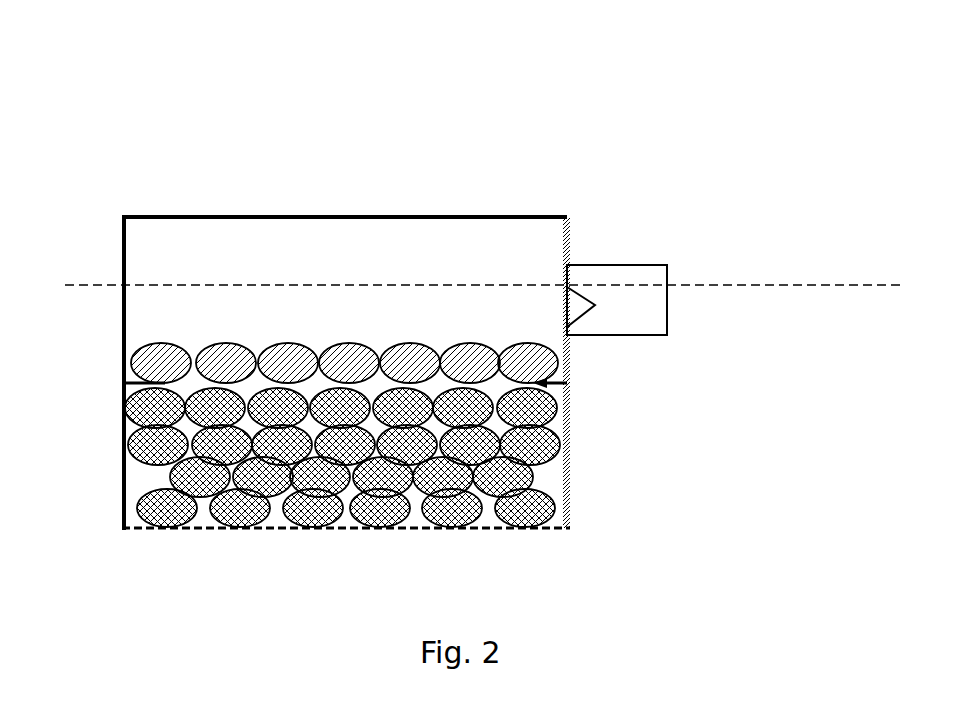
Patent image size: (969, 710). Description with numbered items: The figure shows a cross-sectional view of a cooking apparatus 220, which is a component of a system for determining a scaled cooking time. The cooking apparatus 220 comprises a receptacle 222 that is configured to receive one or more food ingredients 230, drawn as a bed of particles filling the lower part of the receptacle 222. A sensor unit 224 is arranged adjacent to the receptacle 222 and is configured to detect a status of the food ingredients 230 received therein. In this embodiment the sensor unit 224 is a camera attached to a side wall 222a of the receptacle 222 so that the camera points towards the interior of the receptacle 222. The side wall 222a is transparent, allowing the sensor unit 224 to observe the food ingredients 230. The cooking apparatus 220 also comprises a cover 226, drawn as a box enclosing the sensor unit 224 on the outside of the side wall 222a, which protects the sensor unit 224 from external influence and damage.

The cooking apparatus 220 is at (341, 168).
The receptacle 222 is at (123, 490).
The side wall 222a is at (570, 453).
The sensor unit 224 is at (580, 318).
The cover 226 is at (667, 290).
The food ingredients 230 is at (520, 488).